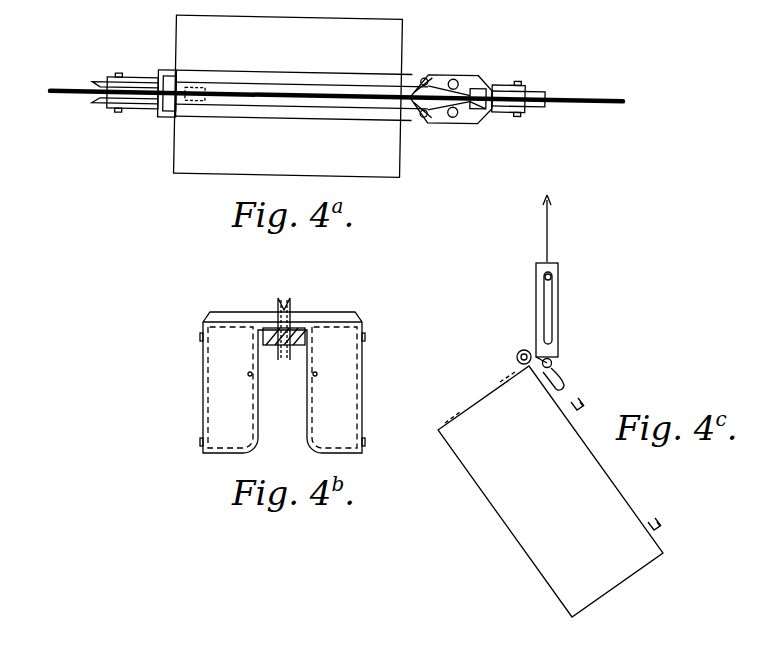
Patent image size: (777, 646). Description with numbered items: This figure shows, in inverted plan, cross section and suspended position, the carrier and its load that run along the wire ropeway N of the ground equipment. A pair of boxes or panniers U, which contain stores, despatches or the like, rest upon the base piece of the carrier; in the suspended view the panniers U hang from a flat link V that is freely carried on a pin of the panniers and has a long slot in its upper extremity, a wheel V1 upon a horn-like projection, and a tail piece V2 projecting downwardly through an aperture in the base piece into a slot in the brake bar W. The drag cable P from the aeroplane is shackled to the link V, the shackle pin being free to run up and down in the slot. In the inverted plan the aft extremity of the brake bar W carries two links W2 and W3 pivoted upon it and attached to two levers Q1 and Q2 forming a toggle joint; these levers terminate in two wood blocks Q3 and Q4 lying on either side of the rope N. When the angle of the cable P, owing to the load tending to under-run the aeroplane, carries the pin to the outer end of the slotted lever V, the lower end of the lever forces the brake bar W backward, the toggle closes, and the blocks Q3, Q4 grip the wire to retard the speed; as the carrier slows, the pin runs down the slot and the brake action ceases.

In FIG. 4A, the boxes or panniers U is at (368, 168).
In FIG. 4B, the boxes or panniers U is at (215, 373).
In FIG. 4C, the boxes or panniers U is at (620, 508).
In FIG. 4A, the ropeway N is at (593, 93).
In FIG. 4B, the ropeway N is at (287, 352).
In FIG. 4A, the brake bar W is at (162, 110).
In FIG. 4B, the brake bar W is at (300, 340).
In FIG. 4C, the flat link V is at (556, 298).
In FIG. 4C, the wheel V1 is at (518, 352).
In FIG. 4A, the tail piece V2 is at (190, 92).
In FIG. 4C, the tail piece V2 is at (565, 382).
In FIG. 4A, the link W2 is at (424, 76).
In FIG. 4A, the link W3 is at (424, 117).
In FIG. 4A, the lever Q1 is at (468, 80).
In FIG. 4A, the lever Q2 is at (467, 115).
In FIG. 4A, the wood block Q3 is at (480, 94).
In FIG. 4A, the wood block Q4 is at (496, 110).
In FIG. 4C, the cable P is at (553, 236).